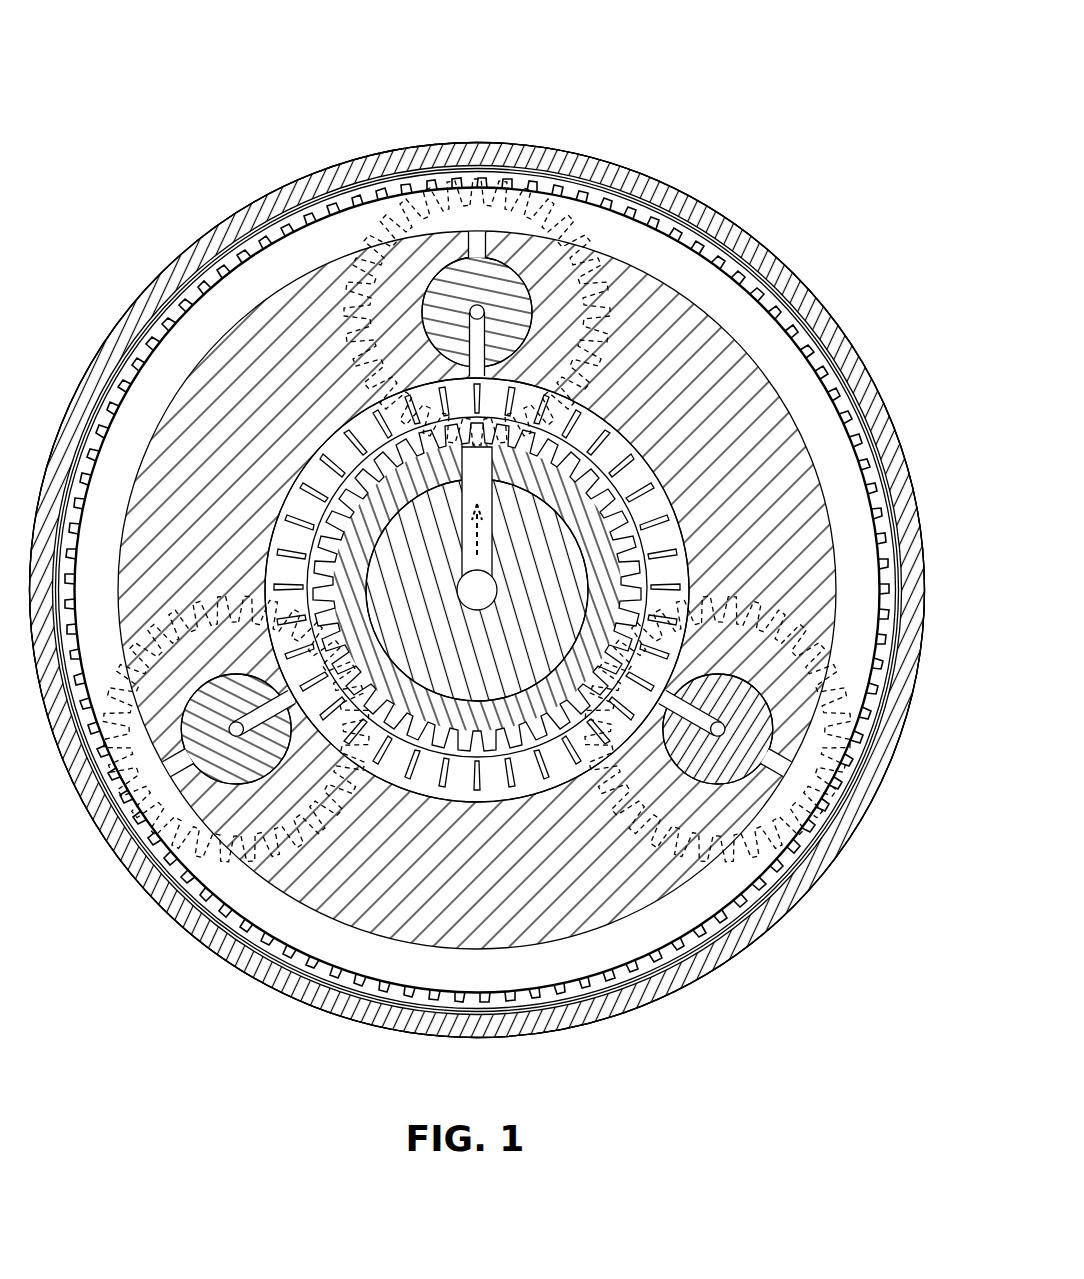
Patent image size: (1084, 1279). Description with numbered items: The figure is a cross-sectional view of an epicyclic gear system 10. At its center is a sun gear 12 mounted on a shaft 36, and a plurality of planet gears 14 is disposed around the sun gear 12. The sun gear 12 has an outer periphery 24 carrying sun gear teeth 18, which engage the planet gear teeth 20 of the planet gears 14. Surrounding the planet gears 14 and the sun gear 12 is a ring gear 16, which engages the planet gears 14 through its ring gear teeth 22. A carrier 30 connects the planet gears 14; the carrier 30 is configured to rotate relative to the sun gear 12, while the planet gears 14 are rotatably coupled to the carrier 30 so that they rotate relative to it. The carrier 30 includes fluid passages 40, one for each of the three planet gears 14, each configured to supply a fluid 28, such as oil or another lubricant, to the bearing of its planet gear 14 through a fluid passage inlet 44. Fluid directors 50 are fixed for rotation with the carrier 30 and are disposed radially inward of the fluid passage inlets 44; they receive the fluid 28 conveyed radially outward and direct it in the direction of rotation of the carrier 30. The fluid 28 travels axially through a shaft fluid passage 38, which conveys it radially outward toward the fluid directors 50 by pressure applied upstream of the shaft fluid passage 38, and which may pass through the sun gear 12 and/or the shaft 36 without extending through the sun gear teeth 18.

The epicyclic gear system 10 is at (730, 52).
The sun gear 12 is at (616, 424).
The planet gears 14 is at (585, 225).
The ring gear 16 is at (850, 417).
The sun gear teeth 18 is at (530, 784).
The planet gear teeth 20 is at (795, 905).
The ring gear teeth 22 is at (883, 437).
The outer periphery 24 is at (438, 793).
The fluid 28 is at (462, 512).
The carrier 30 is at (733, 407).
The shaft 36 is at (476, 676).
The shaft fluid passage 38 is at (462, 576).
The fluid passage 40 is at (519, 351).
The fluid passage inlet 44 is at (428, 337).
The fluid directors 50 is at (652, 515).